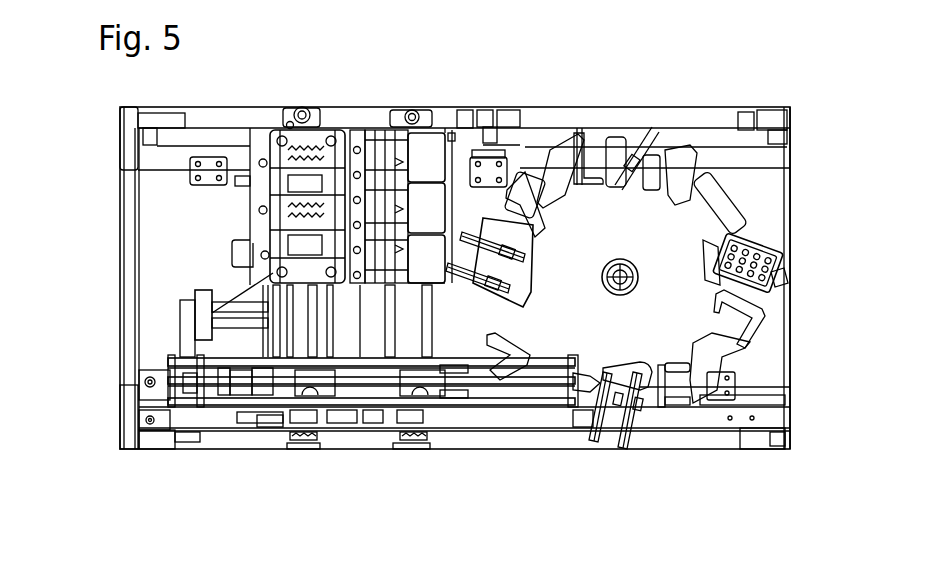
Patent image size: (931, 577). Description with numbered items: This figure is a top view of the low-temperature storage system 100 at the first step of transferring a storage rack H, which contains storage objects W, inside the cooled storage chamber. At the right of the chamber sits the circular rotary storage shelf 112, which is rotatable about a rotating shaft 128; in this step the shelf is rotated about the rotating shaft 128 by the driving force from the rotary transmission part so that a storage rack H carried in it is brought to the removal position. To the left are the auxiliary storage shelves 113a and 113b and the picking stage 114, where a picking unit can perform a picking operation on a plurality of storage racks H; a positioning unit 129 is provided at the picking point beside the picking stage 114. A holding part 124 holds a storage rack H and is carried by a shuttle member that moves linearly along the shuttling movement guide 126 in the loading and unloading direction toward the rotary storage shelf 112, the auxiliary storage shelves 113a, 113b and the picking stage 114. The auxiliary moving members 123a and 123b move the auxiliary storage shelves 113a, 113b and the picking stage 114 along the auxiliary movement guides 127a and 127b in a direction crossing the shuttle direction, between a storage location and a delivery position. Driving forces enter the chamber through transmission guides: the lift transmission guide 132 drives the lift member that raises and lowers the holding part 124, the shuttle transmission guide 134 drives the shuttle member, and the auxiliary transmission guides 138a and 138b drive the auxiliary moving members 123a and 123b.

The low-temperature storage system 100 is at (85, 84).
The rotary storage shelf 112 is at (792, 137).
The picking stage 114 is at (197, 206).
The auxiliary storage shelf 113b is at (285, 188).
The auxiliary storage shelf 113a is at (420, 170).
The positioning unit 129 is at (362, 182).
The auxiliary transmission guide 138a is at (412, 110).
The auxiliary transmission guide 138b is at (302, 108).
The auxiliary moving member 123a is at (482, 155).
The auxiliary moving member 123b is at (200, 321).
The holding part 124 is at (212, 293).
The shuttling movement guide 126 is at (512, 380).
The auxiliary movement guide 127a is at (440, 405).
The auxiliary movement guide 127b is at (325, 380).
The rotating shaft 128 is at (621, 262).
The lift transmission guide 132 is at (133, 378).
The shuttle transmission guide 134 is at (137, 420).
The storage rack H is at (790, 262).
The storage object W is at (783, 287).